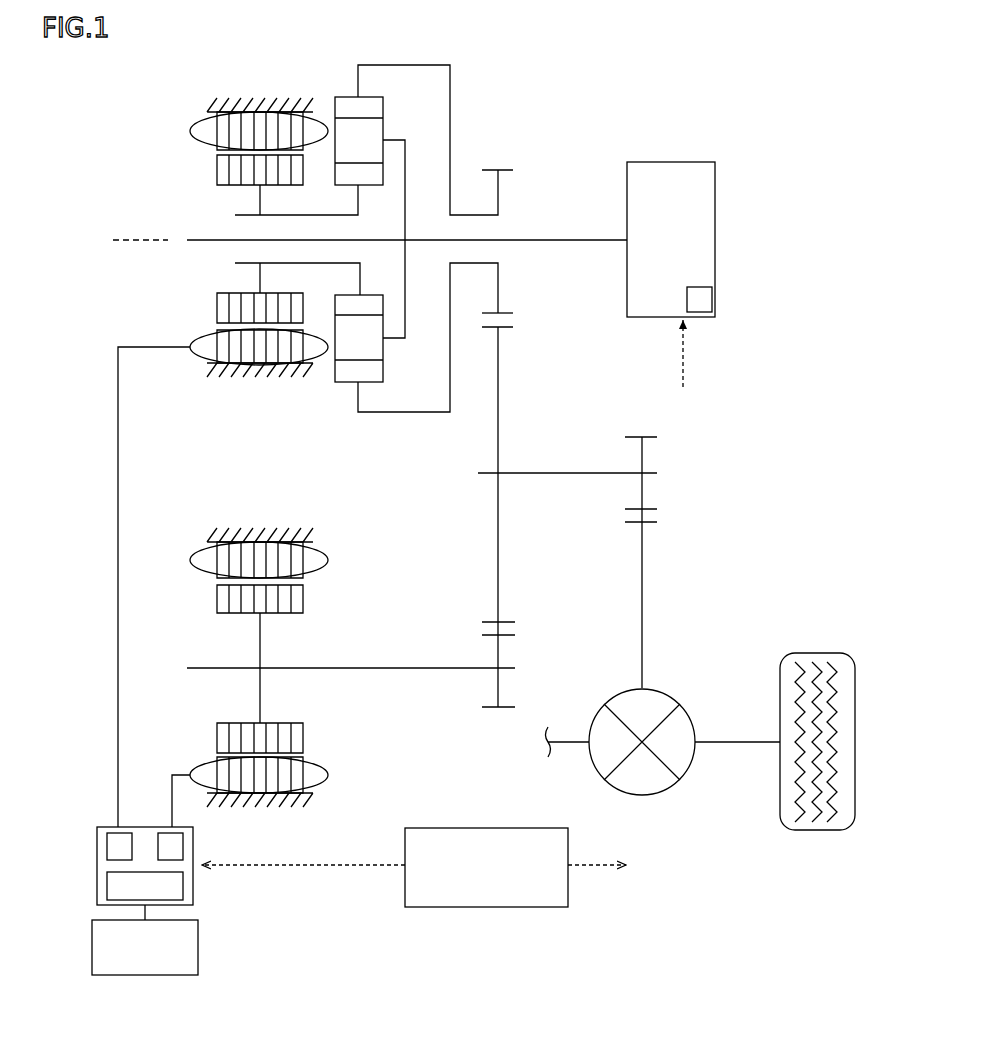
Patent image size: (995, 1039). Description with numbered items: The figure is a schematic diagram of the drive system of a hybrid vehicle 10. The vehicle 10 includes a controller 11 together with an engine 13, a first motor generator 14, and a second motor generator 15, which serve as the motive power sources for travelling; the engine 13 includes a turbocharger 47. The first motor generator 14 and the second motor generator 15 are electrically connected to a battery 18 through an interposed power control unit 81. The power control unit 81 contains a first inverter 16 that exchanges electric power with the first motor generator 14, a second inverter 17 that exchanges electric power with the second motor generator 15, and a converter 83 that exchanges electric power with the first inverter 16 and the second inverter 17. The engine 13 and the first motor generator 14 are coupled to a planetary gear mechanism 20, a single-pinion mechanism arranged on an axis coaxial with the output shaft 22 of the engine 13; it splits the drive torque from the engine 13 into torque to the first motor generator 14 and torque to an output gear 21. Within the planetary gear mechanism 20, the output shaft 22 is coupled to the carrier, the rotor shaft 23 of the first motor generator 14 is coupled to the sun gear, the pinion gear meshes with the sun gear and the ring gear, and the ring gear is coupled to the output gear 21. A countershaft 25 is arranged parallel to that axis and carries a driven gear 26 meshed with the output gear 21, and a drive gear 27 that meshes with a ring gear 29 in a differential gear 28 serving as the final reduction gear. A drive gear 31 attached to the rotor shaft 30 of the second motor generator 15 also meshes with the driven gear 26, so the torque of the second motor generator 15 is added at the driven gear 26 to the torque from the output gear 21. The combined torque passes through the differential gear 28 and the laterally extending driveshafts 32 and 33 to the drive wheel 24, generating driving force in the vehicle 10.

The hybrid vehicle 10 is at (629, 94).
The controller 11 is at (533, 828).
The engine 13 is at (717, 190).
The first motor generator 14 is at (189, 118).
The second motor generator 15 is at (188, 545).
The first inverter 16 is at (105, 845).
The second inverter 17 is at (185, 840).
The battery 18 is at (190, 920).
The planetary gear mechanism 20 is at (328, 76).
The output gear 21 is at (505, 312).
The output shaft 22 is at (595, 236).
The rotor shaft 23 is at (240, 212).
The drive wheel 24 is at (812, 652).
The countershaft 25 is at (555, 478).
The driven gear 26 is at (505, 328).
The drive gear 27 is at (652, 440).
The differential gear 28 is at (665, 690).
The ring gear 29 is at (652, 525).
The rotor shaft 30 is at (197, 665).
The drive gear 31 is at (505, 637).
The driveshaft 32 is at (565, 748).
The driveshaft 33 is at (735, 748).
The turbocharger 47 is at (713, 298).
The power control unit 81 is at (98, 865).
The converter 83 is at (107, 890).